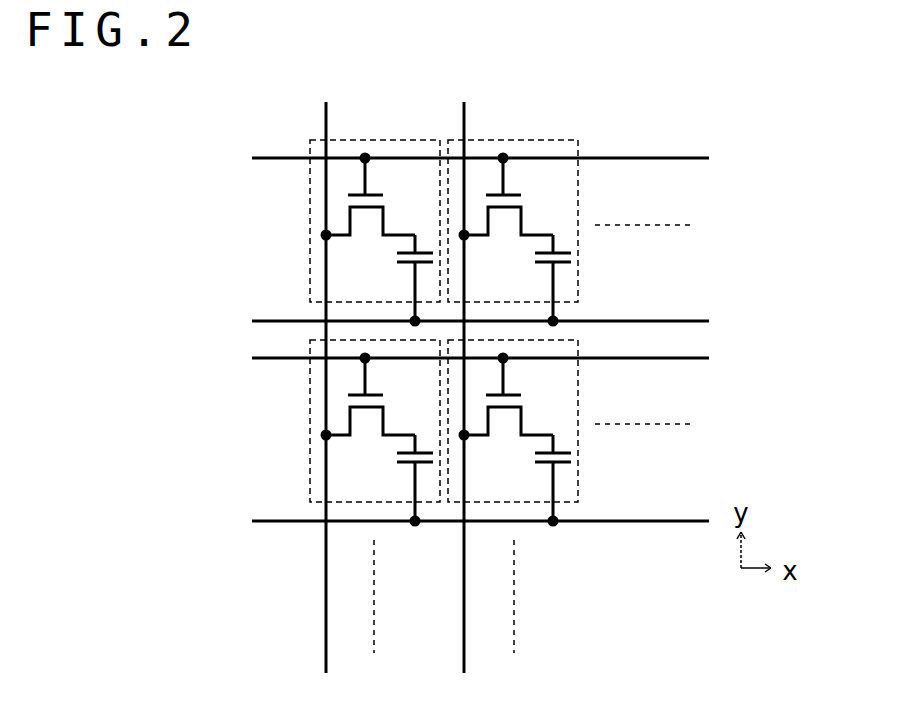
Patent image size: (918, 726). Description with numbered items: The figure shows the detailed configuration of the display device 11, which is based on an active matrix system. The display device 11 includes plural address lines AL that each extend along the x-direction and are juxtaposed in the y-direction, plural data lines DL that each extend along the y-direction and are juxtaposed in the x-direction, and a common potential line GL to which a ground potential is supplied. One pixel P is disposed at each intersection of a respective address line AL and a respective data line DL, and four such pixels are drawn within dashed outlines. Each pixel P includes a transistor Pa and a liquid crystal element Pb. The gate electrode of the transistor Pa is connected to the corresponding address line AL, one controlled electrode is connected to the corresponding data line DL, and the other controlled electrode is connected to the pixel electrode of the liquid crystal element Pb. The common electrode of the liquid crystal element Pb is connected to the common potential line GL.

The display device 11 is at (534, 96).
The pixel P is at (377, 138).
The transistor Pa is at (357, 224).
The liquid crystal element Pb is at (420, 251).
The data line DL is at (324, 118).
The address line AL is at (668, 157).
The common potential line GL is at (666, 320).